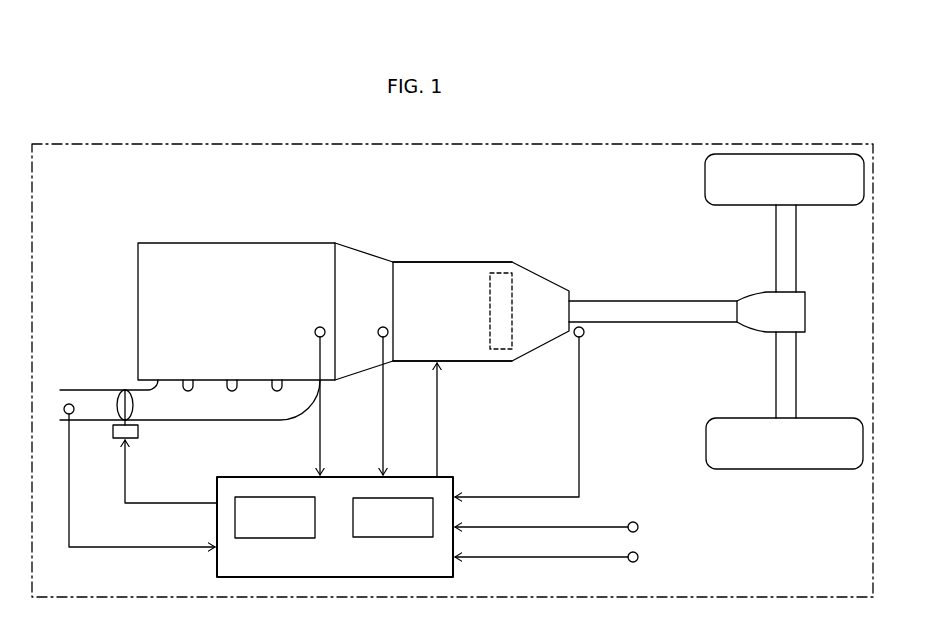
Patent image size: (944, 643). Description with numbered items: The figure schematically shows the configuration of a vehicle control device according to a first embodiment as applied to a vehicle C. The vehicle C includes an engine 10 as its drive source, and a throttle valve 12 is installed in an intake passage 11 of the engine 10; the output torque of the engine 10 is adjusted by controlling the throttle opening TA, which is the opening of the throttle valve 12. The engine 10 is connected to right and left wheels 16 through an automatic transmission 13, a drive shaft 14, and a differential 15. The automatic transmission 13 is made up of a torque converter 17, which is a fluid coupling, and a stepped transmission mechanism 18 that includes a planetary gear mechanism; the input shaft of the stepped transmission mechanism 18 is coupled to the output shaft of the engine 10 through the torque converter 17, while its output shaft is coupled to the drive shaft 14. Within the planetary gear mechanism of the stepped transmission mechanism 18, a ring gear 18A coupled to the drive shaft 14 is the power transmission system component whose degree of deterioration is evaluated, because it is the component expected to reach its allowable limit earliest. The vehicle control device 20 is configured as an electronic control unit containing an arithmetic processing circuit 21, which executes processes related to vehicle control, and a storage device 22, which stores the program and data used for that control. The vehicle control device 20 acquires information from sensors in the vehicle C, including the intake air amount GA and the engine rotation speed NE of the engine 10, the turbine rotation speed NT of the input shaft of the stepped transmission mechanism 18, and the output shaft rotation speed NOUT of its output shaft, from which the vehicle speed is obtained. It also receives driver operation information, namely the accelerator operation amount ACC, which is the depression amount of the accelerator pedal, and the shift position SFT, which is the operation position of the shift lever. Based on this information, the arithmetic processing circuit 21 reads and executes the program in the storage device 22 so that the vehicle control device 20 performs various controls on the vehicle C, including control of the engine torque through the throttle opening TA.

The engine 10 is at (236, 248).
The intake passage 11 is at (182, 422).
The throttle valve 12 is at (139, 410).
The automatic transmission 13 is at (492, 254).
The drive shaft 14 is at (648, 302).
The differential 15 is at (806, 314).
The wheels 16 is at (705, 178).
The torque converter 17 is at (362, 259).
The stepped transmission mechanism 18 is at (443, 268).
The ring gear 18A is at (490, 314).
The vehicle control device 20 is at (275, 477).
The arithmetic processing circuit 21 is at (257, 538).
The storage device 22 is at (373, 537).
The vehicle C is at (645, 597).
The engine rotation speed NE is at (306, 401).
The turbine rotation speed NT is at (370, 401).
The output shaft rotation speed NOUT is at (549, 412).
The intake air amount GA is at (126, 475).
The throttle opening TA is at (165, 464).
The shift position SFT is at (546, 518).
The accelerator operation amount ACC is at (546, 548).